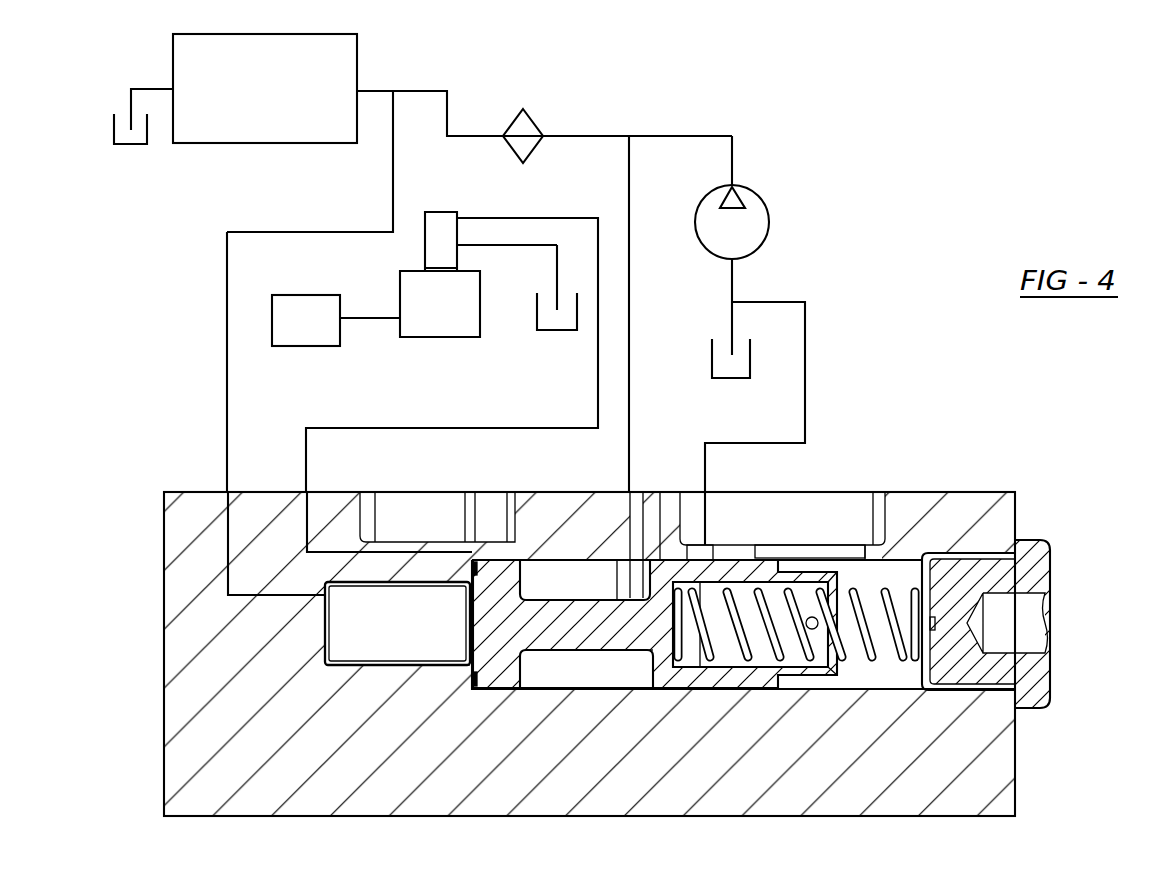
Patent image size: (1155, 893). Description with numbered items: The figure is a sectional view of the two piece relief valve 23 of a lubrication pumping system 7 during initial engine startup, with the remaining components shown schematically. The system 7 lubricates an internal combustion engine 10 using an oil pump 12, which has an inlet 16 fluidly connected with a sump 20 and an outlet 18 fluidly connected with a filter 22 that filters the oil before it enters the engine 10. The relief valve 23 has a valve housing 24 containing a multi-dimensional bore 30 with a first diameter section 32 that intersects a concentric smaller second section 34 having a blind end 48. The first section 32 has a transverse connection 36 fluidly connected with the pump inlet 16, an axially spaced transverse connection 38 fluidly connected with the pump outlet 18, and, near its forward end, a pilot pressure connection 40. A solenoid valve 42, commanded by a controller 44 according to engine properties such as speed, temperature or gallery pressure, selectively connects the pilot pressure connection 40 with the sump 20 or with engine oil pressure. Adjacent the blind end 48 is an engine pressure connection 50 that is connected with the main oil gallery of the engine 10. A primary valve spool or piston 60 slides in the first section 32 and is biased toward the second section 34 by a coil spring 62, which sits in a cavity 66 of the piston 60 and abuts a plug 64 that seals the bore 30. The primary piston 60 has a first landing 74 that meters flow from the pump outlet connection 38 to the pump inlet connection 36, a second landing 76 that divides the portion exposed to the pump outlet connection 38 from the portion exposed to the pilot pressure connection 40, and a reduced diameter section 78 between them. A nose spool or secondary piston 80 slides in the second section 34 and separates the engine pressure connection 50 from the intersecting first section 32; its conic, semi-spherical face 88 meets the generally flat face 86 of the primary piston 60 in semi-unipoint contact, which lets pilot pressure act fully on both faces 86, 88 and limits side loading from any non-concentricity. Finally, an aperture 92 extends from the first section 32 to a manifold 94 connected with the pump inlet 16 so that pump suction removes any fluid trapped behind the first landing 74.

The lubrication pumping system 7 is at (764, 88).
The internal combustion engine 10 is at (209, 143).
The oil pump 12 is at (770, 212).
The pump inlet 16 is at (733, 262).
The pump outlet 18 is at (733, 183).
The sump 20 is at (112, 131).
The filter 22 is at (533, 115).
The two piece relief valve 23 is at (835, 497).
The valve housing 24 is at (1020, 505).
The multi-dimensional bore 30 is at (865, 683).
The first diameter section 32 is at (593, 677).
The second section 34 is at (393, 665).
The transverse connection 36 is at (712, 545).
The transverse connection 38 is at (638, 510).
The pilot pressure connection 40 is at (480, 560).
The solenoid valve 42 is at (400, 279).
The controller 44 is at (310, 346).
The blind end 48 is at (325, 667).
The engine pressure connection 50 is at (323, 595).
The primary valve spool or piston 60 is at (648, 672).
The coil spring 62 is at (900, 657).
The plug 64 is at (1038, 547).
The cavity 66 is at (767, 662).
The first landing 74 is at (740, 556).
The second landing 76 is at (498, 690).
The reduced diameter section 78 is at (565, 657).
The nose spool or secondary piston 80 is at (353, 667).
The face of the primary piston 86 is at (470, 665).
The face of the secondary piston 88 is at (465, 665).
The aperture 92 is at (903, 548).
The manifold 94 is at (872, 547).